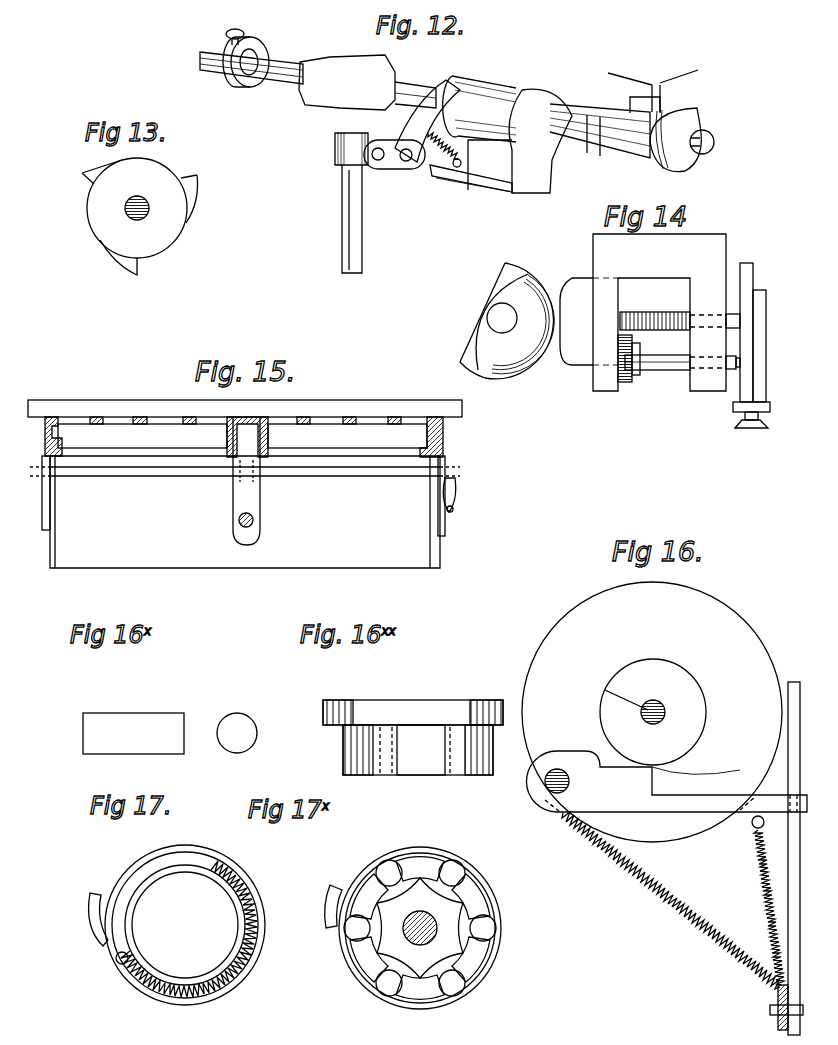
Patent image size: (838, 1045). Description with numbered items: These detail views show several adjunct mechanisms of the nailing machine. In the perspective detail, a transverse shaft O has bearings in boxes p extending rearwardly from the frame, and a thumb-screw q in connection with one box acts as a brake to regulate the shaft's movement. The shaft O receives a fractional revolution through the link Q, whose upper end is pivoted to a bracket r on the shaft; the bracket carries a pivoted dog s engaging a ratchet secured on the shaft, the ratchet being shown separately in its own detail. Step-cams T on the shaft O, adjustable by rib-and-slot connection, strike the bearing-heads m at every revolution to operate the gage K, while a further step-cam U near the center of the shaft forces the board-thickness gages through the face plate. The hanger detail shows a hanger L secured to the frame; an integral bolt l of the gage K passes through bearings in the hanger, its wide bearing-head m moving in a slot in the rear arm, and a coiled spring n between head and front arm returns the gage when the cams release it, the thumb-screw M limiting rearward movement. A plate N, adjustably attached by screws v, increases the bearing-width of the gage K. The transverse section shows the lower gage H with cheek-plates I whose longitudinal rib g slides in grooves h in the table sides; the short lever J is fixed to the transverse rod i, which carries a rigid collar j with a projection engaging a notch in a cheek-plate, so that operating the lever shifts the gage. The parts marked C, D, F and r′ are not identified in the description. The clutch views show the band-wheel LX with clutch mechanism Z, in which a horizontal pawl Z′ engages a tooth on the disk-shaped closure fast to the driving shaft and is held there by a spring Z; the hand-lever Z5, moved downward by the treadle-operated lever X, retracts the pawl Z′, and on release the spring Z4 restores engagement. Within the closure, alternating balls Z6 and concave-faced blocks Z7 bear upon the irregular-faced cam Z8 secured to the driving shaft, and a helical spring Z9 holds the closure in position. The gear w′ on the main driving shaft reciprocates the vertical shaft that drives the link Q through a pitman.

In FIG. 12, the thumb-screw q is at (244, 31).
In FIG. 12, the boxes p is at (258, 58).
In FIG. 12, the step-cam U is at (347, 82).
In FIG. 12, the transverse shaft O is at (412, 100).
In FIG. 12, the integral bolts l is at (460, 88).
In FIG. 14, the integral bolts l is at (680, 309).
In FIG. 12, the bearing-head m is at (662, 100).
In FIG. 14, the bearing-head m is at (578, 362).
In FIG. 12, the step-cams T is at (632, 138).
In FIG. 14, the step-cams T is at (507, 321).
In FIG. 12, the bracket r is at (382, 164).
In FIG. 12, the pivoted dog s is at (416, 150).
In FIG. 12, the pin r′ is at (457, 145).
In FIG. 12, the link Q is at (362, 241).
In FIG. 13, the transverse rod i is at (140, 216).
In FIG. 15, the transverse rod i is at (120, 489).
In FIG. 14, the hangers L is at (659, 312).
In FIG. 14, the coiled spring n is at (630, 352).
In FIG. 14, the thumb-screws M is at (682, 371).
In FIG. 14, the gage K is at (756, 332).
In FIG. 14, the plate N is at (730, 410).
In FIG. 14, the screws v is at (740, 428).
In FIG. 15, the lower gage H is at (150, 410).
In FIG. 15, the cheek-plates I is at (40, 415).
In FIG. 15, the longitudinal rib g is at (40, 446).
In FIG. 15, the grooves h is at (52, 440).
In FIG. 15, the rigid collar j is at (33, 493).
In FIG. 15, the slider C is at (268, 437).
In FIG. 15, the pendulum F is at (256, 520).
In FIG. 15, the box D is at (245, 512).
In FIG. 15, the short lever J is at (455, 480).
In FIG. 16, the band-wheel LX is at (652, 712).
In FIG. 16, the clutch mechanism Z is at (758, 898).
In FIG. 16, the gear w′ is at (623, 696).
In FIG. 17, the gear w′ is at (418, 918).
In FIG. 16, the horizontal pawl Z′ is at (667, 781).
In FIG. 16, the spring Z4 is at (671, 900).
In FIG. 16, the hand-lever Z5 is at (796, 858).
In FIG. 16, the lever X is at (775, 1011).
In FIG. 16, the balls Z6 is at (237, 720).
In FIG. 17, the balls Z6 is at (389, 866).
In FIG. 16, the concave-faced blocks Z7 is at (133, 720).
In FIG. 17, the concave-faced blocks Z7 is at (480, 892).
In FIG. 17, the supplemental disk or cam Z8 is at (384, 943).
In FIG. 17, the helical spring Z9 is at (258, 922).